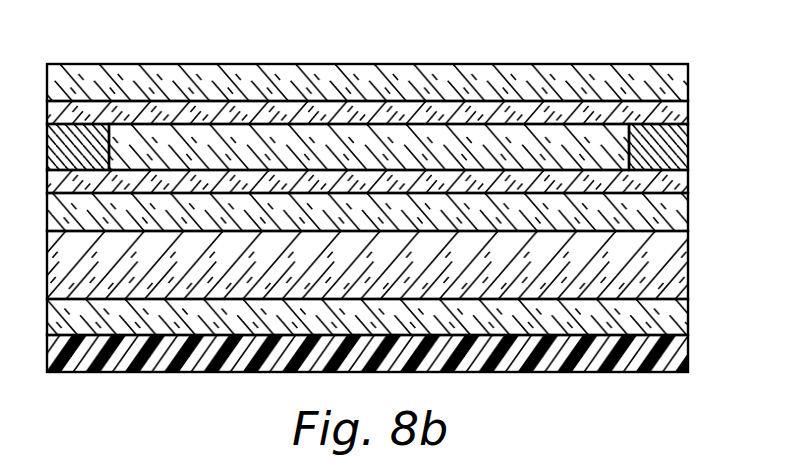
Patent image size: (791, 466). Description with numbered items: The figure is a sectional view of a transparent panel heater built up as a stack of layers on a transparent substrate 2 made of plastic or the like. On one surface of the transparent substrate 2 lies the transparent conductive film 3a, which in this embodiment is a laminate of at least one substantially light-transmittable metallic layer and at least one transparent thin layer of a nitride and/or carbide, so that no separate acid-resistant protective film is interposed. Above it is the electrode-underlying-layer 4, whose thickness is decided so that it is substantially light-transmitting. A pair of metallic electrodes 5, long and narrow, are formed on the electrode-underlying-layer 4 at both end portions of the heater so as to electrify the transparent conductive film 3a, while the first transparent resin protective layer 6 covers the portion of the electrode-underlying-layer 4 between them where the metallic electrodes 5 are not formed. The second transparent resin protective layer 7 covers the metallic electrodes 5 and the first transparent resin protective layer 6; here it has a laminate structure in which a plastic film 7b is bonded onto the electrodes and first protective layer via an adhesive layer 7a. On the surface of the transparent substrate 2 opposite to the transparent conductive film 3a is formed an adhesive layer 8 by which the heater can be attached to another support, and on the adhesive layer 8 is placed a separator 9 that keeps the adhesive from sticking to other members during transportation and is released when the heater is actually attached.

The transparent substrate 2 is at (680, 268).
The transparent conductive film 3a is at (673, 216).
The electrode-underlying-layer 4 is at (678, 184).
The metallic electrodes 5 is at (678, 153).
The first transparent resin protective layer 6 is at (370, 147).
The second transparent resin protective layer 7 is at (417, 94).
The adhesive layer 7a is at (680, 114).
The plastic film 7b is at (675, 81).
The adhesive layer 8 is at (677, 319).
The separator 9 is at (678, 356).